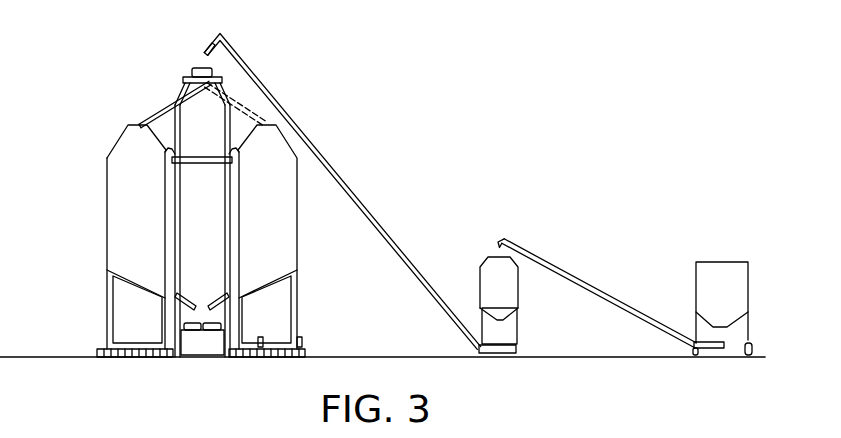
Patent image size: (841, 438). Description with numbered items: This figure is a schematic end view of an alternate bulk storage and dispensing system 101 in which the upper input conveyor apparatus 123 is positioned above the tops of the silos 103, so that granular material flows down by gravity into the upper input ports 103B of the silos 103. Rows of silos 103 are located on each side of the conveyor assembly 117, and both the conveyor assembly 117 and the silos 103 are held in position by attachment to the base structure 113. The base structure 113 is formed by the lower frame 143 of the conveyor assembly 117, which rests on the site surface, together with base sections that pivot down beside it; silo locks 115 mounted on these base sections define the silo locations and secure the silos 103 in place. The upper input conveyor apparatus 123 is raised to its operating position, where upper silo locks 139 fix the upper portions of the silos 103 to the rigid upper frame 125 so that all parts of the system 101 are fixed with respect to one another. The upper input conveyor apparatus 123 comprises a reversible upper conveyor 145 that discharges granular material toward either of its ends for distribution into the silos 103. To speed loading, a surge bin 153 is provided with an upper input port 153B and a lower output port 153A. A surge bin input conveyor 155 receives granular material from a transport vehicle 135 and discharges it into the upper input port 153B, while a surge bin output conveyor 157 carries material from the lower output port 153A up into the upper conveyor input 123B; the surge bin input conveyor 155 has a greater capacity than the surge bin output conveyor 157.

The bulk storage and dispensing system 101 is at (430, 56).
The silo 103 is at (107, 233).
The upper input port 103B is at (128, 125).
The base structure 113 is at (96, 349).
The silo lock 115 is at (265, 337).
The conveyor assembly 117 is at (240, 82).
The upper input conveyor apparatus 123 is at (190, 74).
The upper conveyor input 123B is at (200, 67).
The rigid upper frame 125 is at (198, 163).
The transport vehicle 135 is at (713, 262).
The upper silo lock 139 is at (163, 110).
The lower frame 143 is at (188, 362).
The reversible upper conveyor 145 is at (228, 42).
The surge bin 153 is at (480, 266).
The lower output port 153A is at (500, 318).
The upper input port 153B is at (499, 243).
The surge bin input conveyor 155 is at (573, 270).
The surge bin output conveyor 157 is at (325, 152).